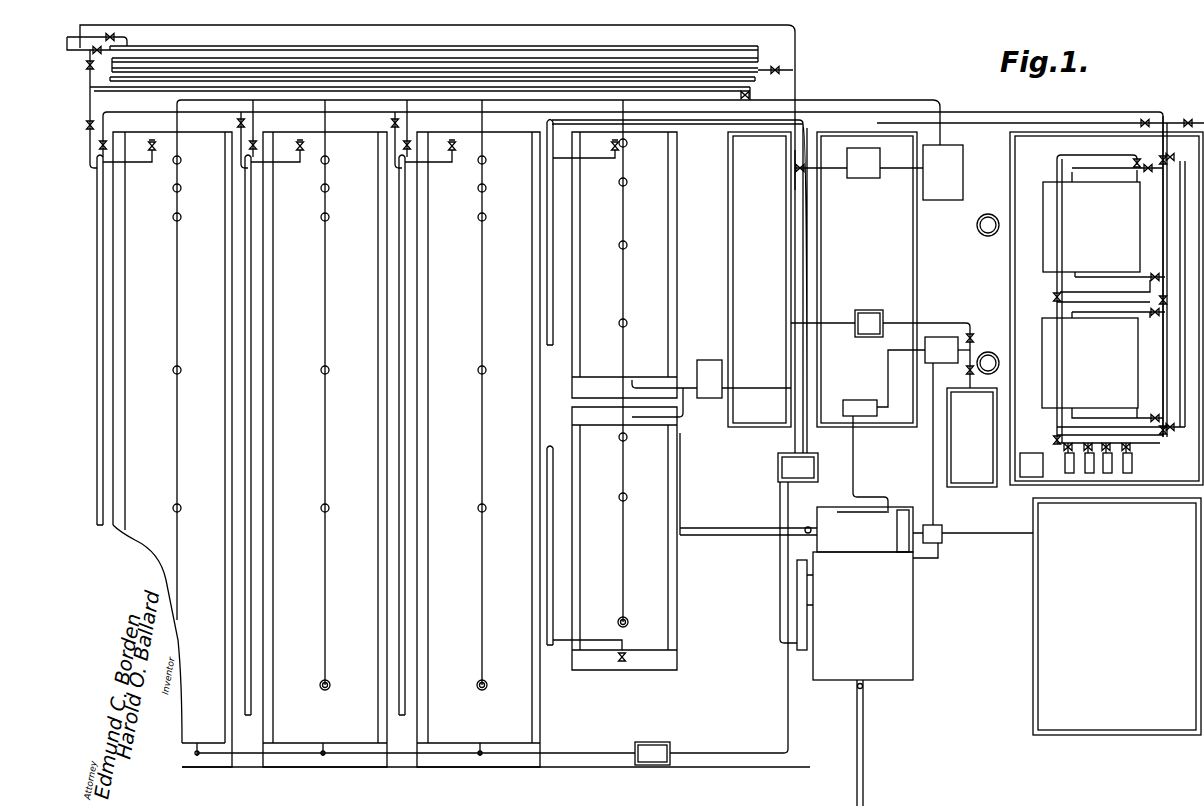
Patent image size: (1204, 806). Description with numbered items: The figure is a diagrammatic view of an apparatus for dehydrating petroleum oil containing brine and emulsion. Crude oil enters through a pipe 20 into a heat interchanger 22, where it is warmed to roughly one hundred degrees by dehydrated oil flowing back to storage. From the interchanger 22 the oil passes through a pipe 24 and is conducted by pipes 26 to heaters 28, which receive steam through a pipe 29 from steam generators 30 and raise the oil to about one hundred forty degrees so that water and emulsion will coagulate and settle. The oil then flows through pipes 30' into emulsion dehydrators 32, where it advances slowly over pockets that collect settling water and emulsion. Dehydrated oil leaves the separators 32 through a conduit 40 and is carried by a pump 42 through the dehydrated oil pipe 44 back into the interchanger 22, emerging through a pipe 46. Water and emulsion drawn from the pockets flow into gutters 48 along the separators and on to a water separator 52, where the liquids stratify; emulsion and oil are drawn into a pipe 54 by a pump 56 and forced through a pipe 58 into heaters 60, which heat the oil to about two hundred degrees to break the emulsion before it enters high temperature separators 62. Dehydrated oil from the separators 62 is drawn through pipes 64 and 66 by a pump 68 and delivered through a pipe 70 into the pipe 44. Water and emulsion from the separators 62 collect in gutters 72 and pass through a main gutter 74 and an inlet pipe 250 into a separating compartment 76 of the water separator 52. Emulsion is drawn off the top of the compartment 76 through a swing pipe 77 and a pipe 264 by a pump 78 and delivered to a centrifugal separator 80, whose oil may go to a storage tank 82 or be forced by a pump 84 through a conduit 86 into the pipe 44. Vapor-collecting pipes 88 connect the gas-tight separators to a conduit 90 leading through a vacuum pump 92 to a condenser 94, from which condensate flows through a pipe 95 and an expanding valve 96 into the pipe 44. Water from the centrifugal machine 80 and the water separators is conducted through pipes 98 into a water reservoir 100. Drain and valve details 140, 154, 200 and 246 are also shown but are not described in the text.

The pipe 20 is at (74, 60).
The heat interchanger 22 is at (418, 44).
The pipe 24 is at (490, 96).
The pipes 26 is at (90, 140).
The heaters 28 is at (103, 283).
The pipe 29 is at (1012, 112).
The steam generators 30 is at (1106, 300).
The pipes 30' is at (284, 169).
The emulsion dehydrators 32 is at (461, 449).
The conduit 40 is at (574, 752).
The pump 42 is at (652, 741).
The dehydrated oil pipe 44 is at (792, 164).
The pipe 46 is at (106, 36).
The gutters 48 is at (122, 363).
The water separator 52 is at (900, 644).
The pipe 54 is at (779, 622).
The pump 56 is at (814, 474).
The pipe 58 is at (547, 428).
The heaters 60 is at (547, 330).
The high temperature separators 62 is at (624, 391).
The pipe 64 is at (650, 418).
The pipe 66 is at (660, 384).
The pump 68 is at (709, 379).
The pipe 70 is at (762, 387).
The gutters 72 is at (672, 224).
The main gutter 74 is at (740, 537).
The separating compartment 76 is at (894, 510).
The swing pipe 77 is at (862, 514).
The pump 78 is at (856, 399).
The centrifugal separator 80 is at (940, 336).
The storage tank 82 is at (997, 434).
The pump 84 is at (878, 310).
The conduit 86 is at (840, 322).
The vapor-collecting pipes 88 is at (177, 460).
The conduit 90 is at (850, 99).
The vacuum pump 92 is at (955, 186).
The condenser 94 is at (864, 178).
The pipe 95 is at (830, 170).
The expanding valve 96 is at (796, 175).
The pipes 98 is at (930, 524).
The water reservoir 100 is at (1117, 616).
The drain valve 140 is at (200, 748).
The valve connection 154 is at (608, 162).
The drain pipe 200 is at (866, 688).
The baffle 246 is at (812, 602).
The inlet pipe 250 is at (808, 526).
The pipe 264 is at (856, 456).